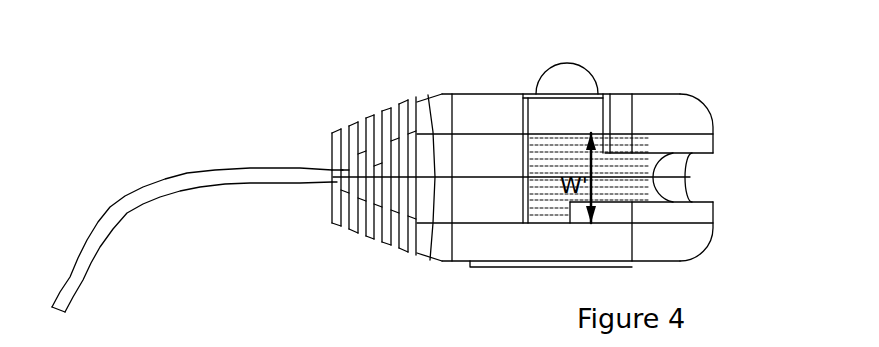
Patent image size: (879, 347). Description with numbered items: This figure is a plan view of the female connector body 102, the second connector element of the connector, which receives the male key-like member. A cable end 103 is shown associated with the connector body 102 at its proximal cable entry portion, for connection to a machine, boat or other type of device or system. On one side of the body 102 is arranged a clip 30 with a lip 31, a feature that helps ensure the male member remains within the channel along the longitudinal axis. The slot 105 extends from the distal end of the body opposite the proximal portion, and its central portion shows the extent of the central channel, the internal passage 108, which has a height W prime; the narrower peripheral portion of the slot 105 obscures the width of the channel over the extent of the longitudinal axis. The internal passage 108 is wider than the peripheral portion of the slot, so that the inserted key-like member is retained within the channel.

The female connector body 102 is at (428, 84).
The cable end 103 is at (183, 177).
The clip 30 is at (540, 107).
The lip 31 is at (583, 82).
The internal passage 108 is at (635, 170).
The slot 105 is at (706, 177).